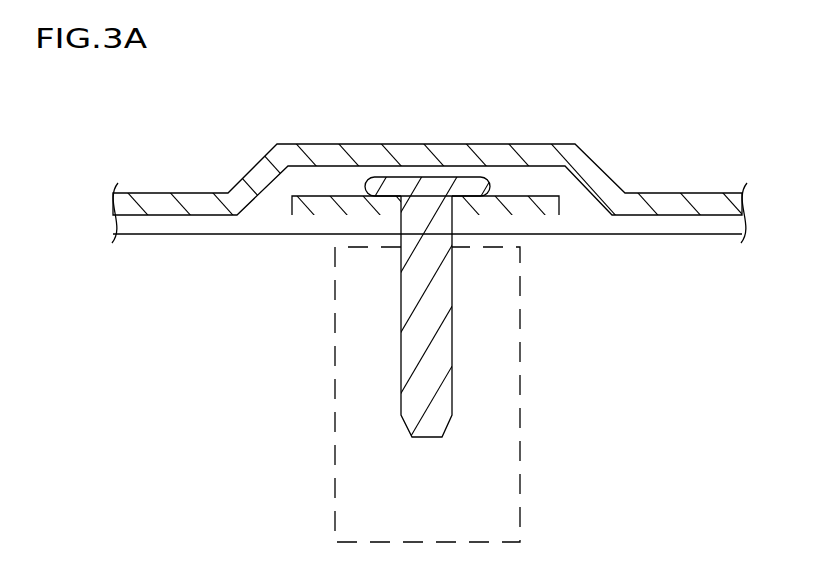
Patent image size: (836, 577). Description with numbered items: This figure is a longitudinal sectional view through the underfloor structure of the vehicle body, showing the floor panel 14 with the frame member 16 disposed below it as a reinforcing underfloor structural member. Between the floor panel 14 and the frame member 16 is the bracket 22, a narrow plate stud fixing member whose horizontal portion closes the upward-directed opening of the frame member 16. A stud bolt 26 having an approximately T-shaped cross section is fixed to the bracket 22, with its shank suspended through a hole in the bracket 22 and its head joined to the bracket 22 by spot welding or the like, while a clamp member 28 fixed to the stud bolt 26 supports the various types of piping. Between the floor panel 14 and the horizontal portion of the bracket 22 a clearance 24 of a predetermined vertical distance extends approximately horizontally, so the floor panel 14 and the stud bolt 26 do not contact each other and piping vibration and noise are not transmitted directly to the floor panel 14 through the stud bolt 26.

The floor panel 14 is at (661, 193).
The frame member 16 is at (577, 234).
The bracket 22 is at (521, 196).
The clearance 24 is at (330, 192).
The stud bolt 26 is at (408, 177).
The clamp member 28 is at (520, 395).